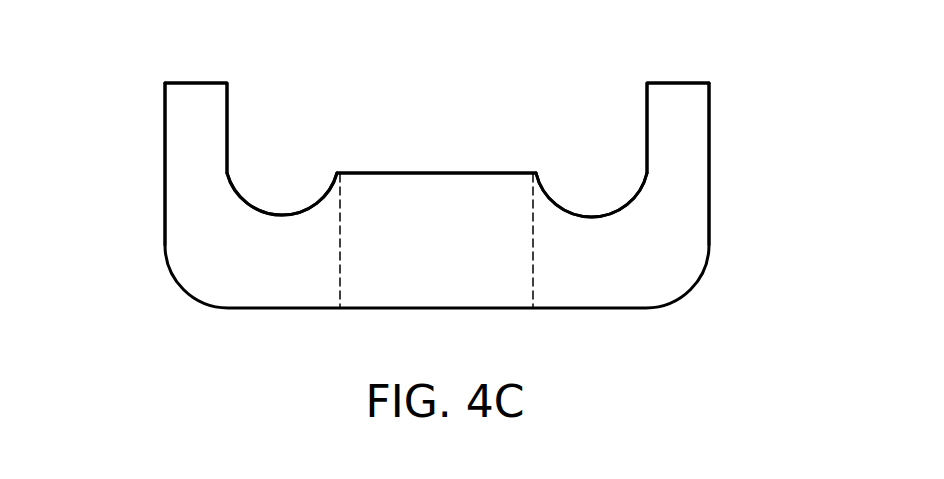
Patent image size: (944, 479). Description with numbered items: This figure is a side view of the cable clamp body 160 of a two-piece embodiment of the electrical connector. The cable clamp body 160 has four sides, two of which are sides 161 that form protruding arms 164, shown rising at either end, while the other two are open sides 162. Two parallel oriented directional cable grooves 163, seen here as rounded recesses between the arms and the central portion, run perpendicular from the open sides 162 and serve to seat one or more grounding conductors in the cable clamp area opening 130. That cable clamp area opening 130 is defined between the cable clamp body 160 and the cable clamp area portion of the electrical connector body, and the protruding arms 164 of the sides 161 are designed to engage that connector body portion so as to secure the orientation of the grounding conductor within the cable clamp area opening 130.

The cable clamp area opening 130 is at (370, 145).
The cable clamp body 160 is at (692, 289).
The side 161 is at (200, 122).
The open side 162 is at (556, 268).
The directional cable groove 163 is at (278, 192).
The protruding arm 164 is at (200, 147).